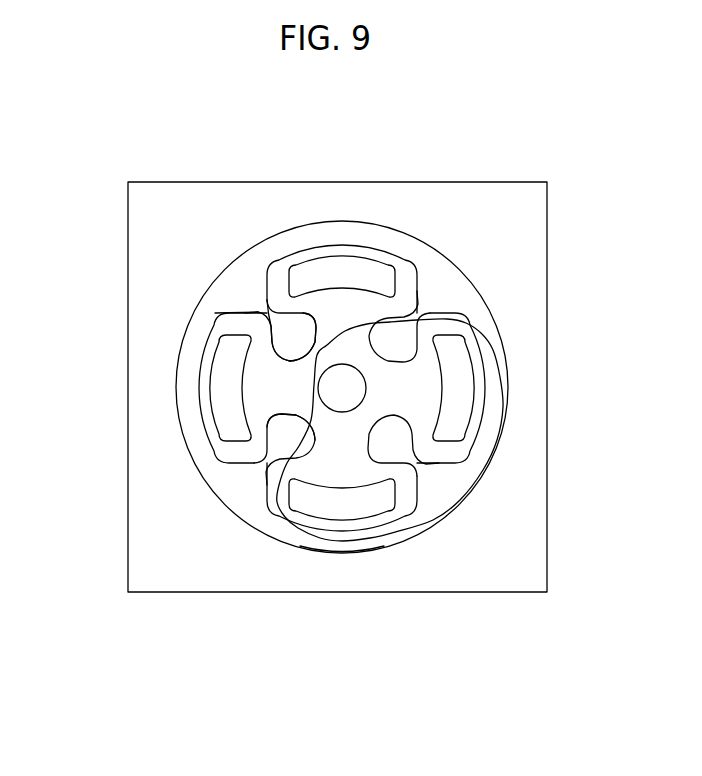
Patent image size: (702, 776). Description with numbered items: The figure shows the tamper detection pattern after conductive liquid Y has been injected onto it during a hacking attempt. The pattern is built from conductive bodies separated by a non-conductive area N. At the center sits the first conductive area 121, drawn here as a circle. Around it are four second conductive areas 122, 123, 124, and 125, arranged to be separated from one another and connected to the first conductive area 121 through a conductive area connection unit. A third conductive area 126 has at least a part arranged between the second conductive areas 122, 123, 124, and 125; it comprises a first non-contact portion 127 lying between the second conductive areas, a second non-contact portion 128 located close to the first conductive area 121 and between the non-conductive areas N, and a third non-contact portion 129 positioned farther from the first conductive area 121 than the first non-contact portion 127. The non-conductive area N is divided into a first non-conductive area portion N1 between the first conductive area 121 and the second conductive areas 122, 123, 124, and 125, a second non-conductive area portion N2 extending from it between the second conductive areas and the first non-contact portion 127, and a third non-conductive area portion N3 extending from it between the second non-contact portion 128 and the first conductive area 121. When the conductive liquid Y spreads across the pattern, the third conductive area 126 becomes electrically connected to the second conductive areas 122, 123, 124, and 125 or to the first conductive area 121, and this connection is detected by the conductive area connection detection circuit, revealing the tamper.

The first conductive area 121 is at (347, 380).
The second conductive area 122 is at (367, 502).
The second conductive area 123 is at (223, 388).
The second conductive area 124 is at (345, 268).
The second conductive area 125 is at (458, 389).
The third conductive area 126 is at (292, 555).
The first non-contact portion 127 is at (263, 467).
The second non-contact portion 128 is at (290, 433).
The third non-contact portion 129 is at (342, 596).
The non-conductive area N is at (231, 227).
The first non-conductive area portion N1 is at (271, 372).
The second non-conductive area portion N2 is at (238, 323).
The third non-conductive area portion N3 is at (317, 352).
The conductive liquid Y is at (494, 352).